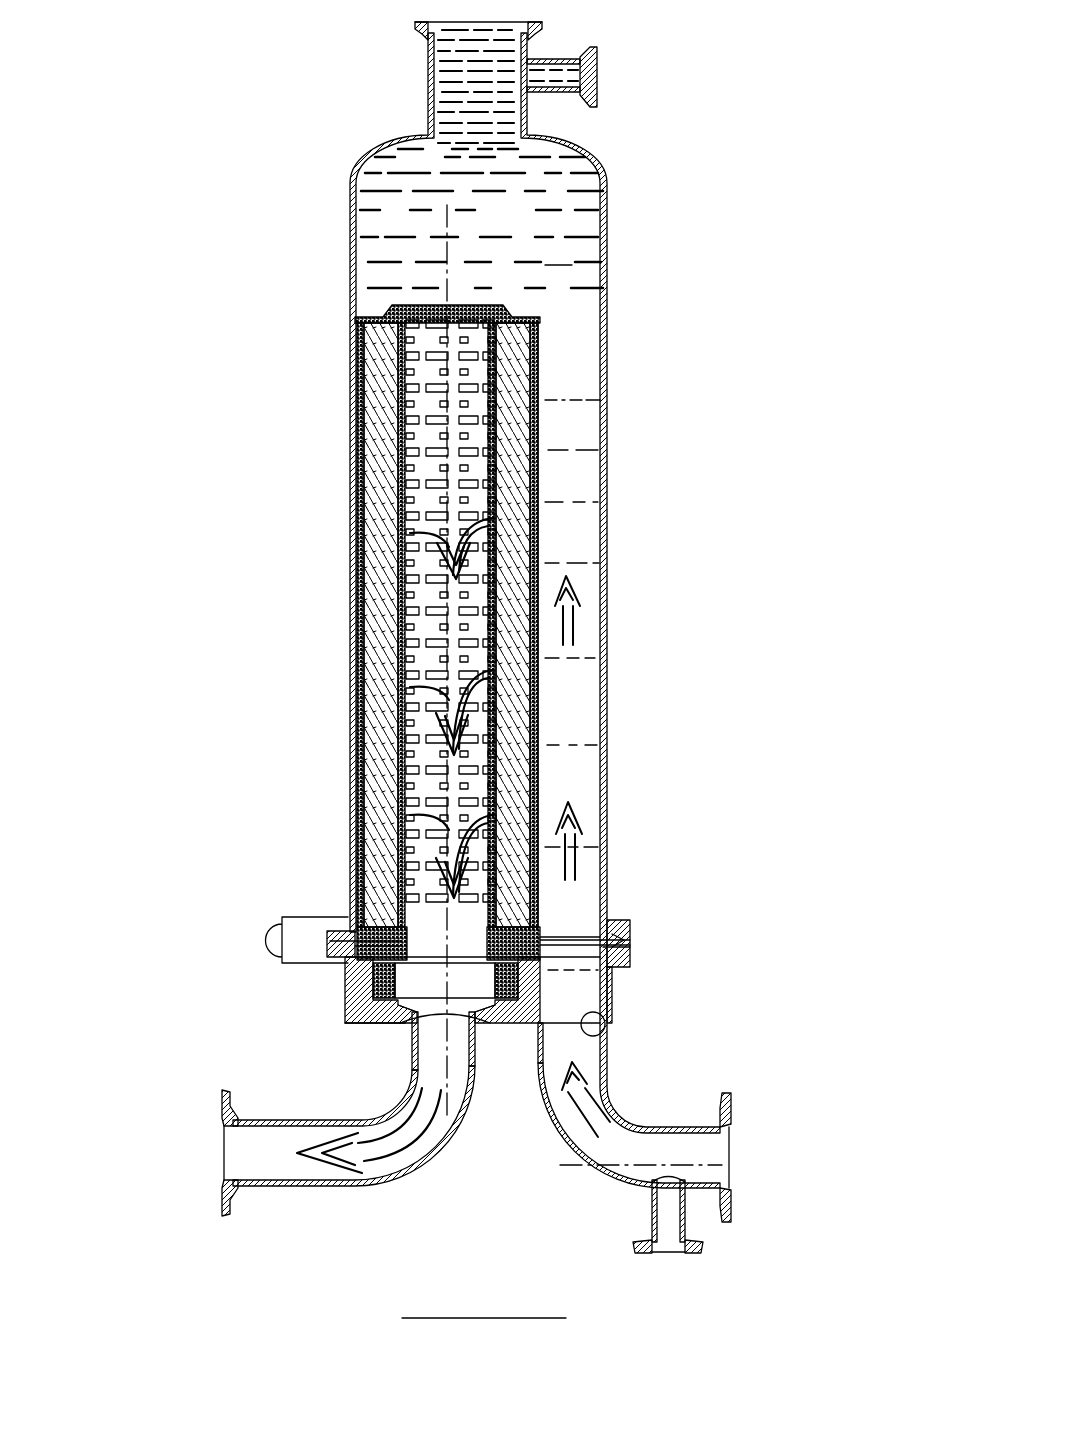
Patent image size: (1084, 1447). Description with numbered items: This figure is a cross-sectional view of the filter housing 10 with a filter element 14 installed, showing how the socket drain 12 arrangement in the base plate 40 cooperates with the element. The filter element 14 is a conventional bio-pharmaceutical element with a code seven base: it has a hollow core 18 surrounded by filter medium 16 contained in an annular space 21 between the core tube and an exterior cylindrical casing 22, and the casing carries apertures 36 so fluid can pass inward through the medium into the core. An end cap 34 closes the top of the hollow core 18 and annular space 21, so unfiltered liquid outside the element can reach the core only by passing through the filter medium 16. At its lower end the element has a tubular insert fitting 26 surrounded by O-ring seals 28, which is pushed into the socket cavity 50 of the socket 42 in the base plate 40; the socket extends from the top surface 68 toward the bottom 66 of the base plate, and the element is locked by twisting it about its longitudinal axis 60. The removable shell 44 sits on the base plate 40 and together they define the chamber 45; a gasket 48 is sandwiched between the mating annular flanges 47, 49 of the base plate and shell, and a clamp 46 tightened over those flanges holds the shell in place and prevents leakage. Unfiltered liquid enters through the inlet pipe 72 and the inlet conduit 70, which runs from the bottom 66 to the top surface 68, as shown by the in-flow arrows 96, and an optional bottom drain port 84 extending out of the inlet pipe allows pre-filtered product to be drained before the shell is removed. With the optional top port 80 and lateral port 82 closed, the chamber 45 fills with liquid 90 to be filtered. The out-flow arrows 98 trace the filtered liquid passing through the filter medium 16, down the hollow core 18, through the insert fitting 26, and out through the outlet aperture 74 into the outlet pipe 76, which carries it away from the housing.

The filter housing 10 is at (338, 122).
The socket drain 12 is at (575, 958).
The filter element 14 is at (482, 616).
The filter medium 16 is at (535, 356).
The hollow core 18 is at (437, 415).
The annular space 21 is at (385, 362).
The exterior cylindrical casing 22 is at (540, 393).
The insert fitting 26 is at (536, 1030).
The O-ring seals 28 is at (385, 978).
The end cap 34 is at (462, 305).
The apertures 36 is at (540, 440).
The base plate 40 is at (345, 1000).
The socket 42 is at (412, 1013).
The shell 44 is at (607, 240).
The chamber 45 is at (558, 254).
The clamp 46 is at (632, 925).
The annular flange 47 is at (630, 947).
The gasket 48 is at (630, 940).
The annular flange 49 is at (625, 942).
The socket cavity 50 is at (375, 890).
The longitudinal axis 60 is at (455, 229).
The bottom 66 is at (362, 1023).
The top surface 68 is at (540, 940).
The inlet conduit 70 is at (606, 1037).
The inlet pipe 72 is at (606, 1087).
The outlet aperture 74 is at (474, 1094).
The outlet pipe 76 is at (342, 1118).
The top port 80 is at (510, 25).
The lateral port 82 is at (597, 74).
The bottom drain port 84 is at (680, 1257).
The liquid 90 is at (566, 176).
The in-flow arrows 96 is at (588, 620).
The out-flow arrows 98 is at (410, 533).